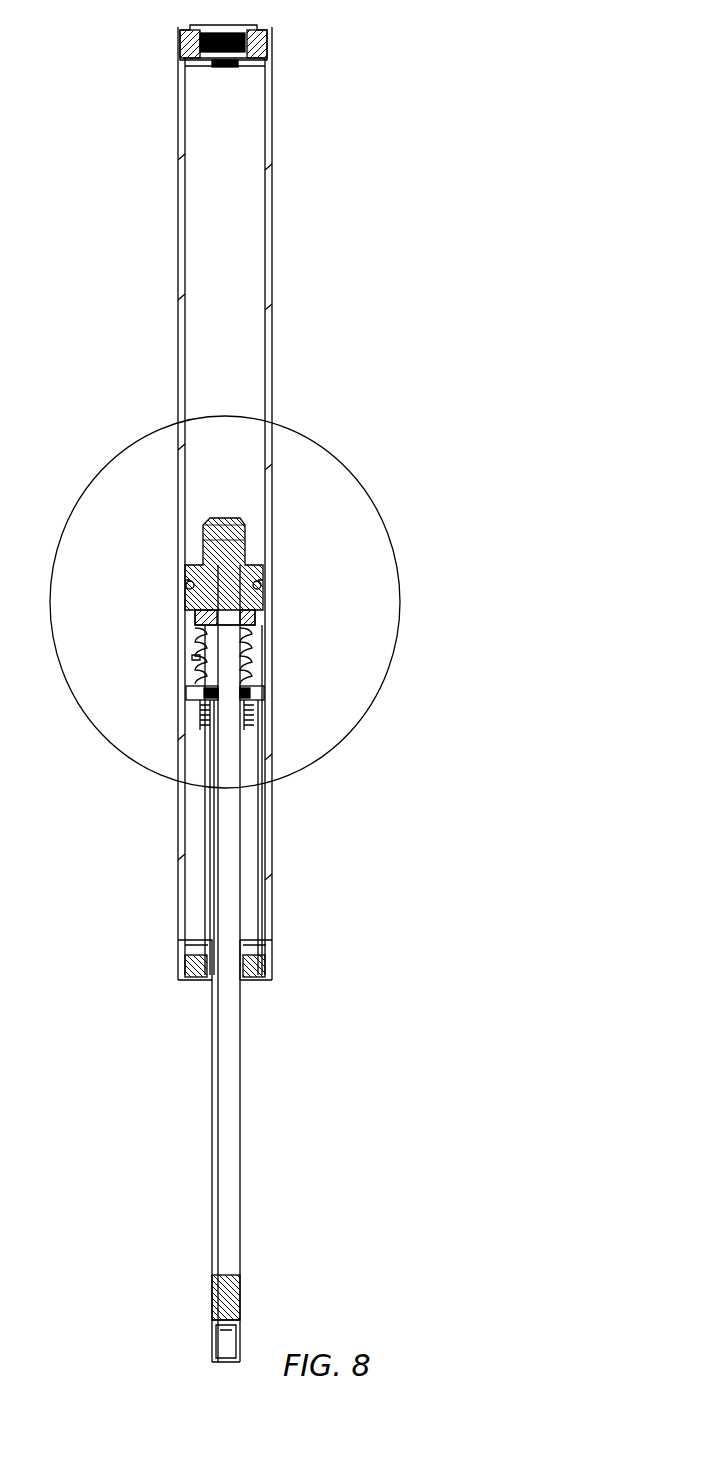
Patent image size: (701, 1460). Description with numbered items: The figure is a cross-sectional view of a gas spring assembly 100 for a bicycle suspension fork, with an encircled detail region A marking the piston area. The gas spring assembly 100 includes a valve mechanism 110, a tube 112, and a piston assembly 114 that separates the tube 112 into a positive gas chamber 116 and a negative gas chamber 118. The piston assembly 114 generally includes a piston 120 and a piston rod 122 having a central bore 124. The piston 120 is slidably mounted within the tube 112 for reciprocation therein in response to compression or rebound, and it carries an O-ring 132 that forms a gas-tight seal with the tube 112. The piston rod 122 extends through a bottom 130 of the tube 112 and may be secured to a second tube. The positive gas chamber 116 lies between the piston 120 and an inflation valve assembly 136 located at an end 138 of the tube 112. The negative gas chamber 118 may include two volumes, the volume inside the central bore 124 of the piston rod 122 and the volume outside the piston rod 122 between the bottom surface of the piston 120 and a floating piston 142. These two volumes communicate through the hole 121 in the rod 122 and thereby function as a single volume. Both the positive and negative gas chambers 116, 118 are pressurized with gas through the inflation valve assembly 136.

The gas spring assembly 100 is at (100, 258).
The tube 112 is at (268, 300).
The positive gas chamber 116 is at (227, 358).
The inflation valve assembly 136 is at (262, 26).
The end of the tube 138 is at (265, 60).
The detail region A is at (362, 503).
The piston 120 is at (205, 573).
The valve mechanism 110 is at (263, 578).
The O-ring 132 is at (261, 586).
The piston rod 122 is at (241, 1150).
The hole 121 is at (228, 636).
The negative gas chamber 118 is at (258, 656).
The piston assembly 114 is at (207, 660).
The floating piston 142 is at (255, 703).
The central bore 124 is at (228, 750).
The bottom of the tube 130 is at (195, 982).